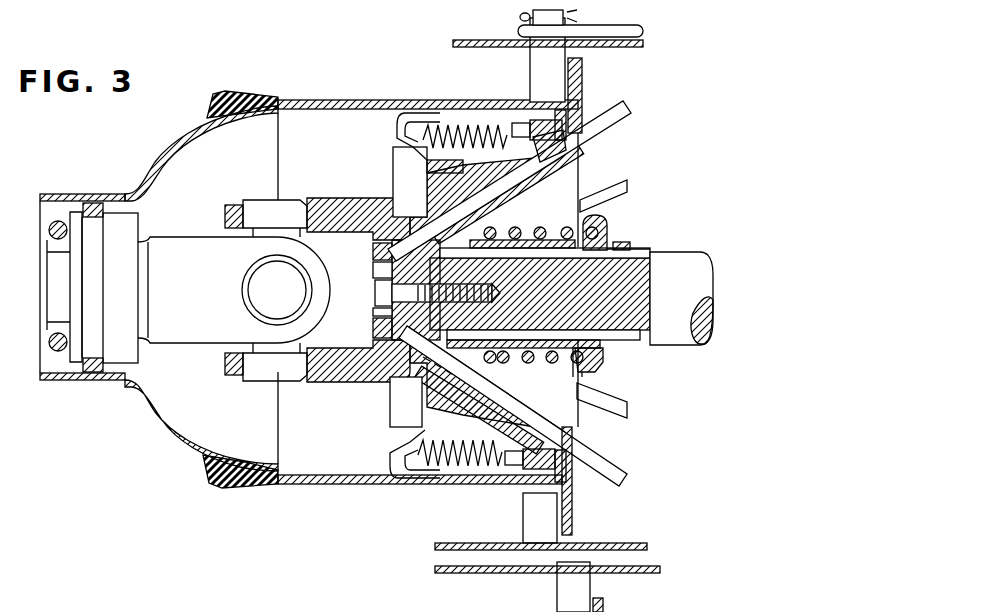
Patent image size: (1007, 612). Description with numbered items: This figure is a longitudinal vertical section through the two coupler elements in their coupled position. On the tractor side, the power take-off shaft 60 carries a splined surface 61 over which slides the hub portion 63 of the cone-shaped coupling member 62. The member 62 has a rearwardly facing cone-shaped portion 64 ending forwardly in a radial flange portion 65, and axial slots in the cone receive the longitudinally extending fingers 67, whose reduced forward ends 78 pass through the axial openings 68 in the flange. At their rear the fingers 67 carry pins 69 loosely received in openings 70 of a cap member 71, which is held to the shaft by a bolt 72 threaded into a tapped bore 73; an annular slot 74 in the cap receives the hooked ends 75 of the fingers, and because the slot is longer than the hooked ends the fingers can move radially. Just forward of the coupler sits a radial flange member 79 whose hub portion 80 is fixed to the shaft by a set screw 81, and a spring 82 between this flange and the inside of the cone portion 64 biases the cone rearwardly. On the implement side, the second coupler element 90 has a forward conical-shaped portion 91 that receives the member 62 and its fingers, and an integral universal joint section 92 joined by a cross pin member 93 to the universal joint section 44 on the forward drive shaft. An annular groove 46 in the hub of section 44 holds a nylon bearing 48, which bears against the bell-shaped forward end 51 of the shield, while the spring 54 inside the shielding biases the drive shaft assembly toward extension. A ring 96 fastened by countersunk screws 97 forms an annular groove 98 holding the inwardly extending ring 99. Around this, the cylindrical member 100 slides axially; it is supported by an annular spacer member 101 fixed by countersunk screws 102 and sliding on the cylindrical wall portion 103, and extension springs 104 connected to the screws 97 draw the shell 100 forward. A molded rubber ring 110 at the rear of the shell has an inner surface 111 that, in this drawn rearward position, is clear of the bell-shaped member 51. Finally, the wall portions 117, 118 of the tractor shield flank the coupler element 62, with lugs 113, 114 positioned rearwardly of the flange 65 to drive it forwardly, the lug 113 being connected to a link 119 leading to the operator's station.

The universal joint section 44 is at (190, 328).
The annular groove 46 is at (98, 284).
The annular nylon bearing 48 is at (97, 213).
The bell-shaped forward end 51 is at (138, 398).
The spring 54 is at (62, 218).
The power take-off shaft 60 is at (685, 262).
The splined surface 61 is at (619, 352).
The cone-shaped coupling member 62 is at (562, 188).
The hub portion 63 is at (528, 232).
The cone-shaped portion 64 is at (538, 196).
The radial flange portion 65 is at (582, 75).
The fingers 67 is at (622, 120).
The axial openings 68 is at (576, 155).
The pins 69 is at (374, 252).
The openings 70 is at (374, 323).
The cap member 71 is at (374, 312).
The bolt 72 is at (374, 293).
The tapped bore 73 is at (497, 238).
The annular slot 74 is at (411, 328).
The hooked ends 75 is at (374, 271).
The reduced forward end 78 is at (606, 124).
The radial flange member 79 is at (598, 230).
The hub portion 80 is at (631, 246).
The set screw 81 is at (620, 242).
The spring 82 is at (551, 239).
The second coupler element 90 is at (438, 196).
The conical-shaped portion 91 is at (455, 190).
The universal joint section 92 is at (356, 197).
The cross pin member 93 is at (290, 273).
The ring 96 is at (568, 115).
The countersunk screws 97 is at (530, 122).
The annular groove 98 is at (550, 119).
The radially inwardly extending ring 99 is at (567, 136).
The cylindrical member 100 is at (358, 100).
The annular spacer member 101 is at (397, 125).
The countersunk screws 102 is at (410, 485).
The cylindrical wall portion 103 is at (468, 168).
The extension springs 104 is at (450, 123).
The molded rubber ring 110 is at (275, 99).
The inner surface 111 is at (208, 455).
The lug 113 is at (560, 55).
The lug 114 is at (551, 514).
The wall portion 117 is at (480, 40).
The wall portion 118 is at (638, 544).
The link 119 is at (633, 31).